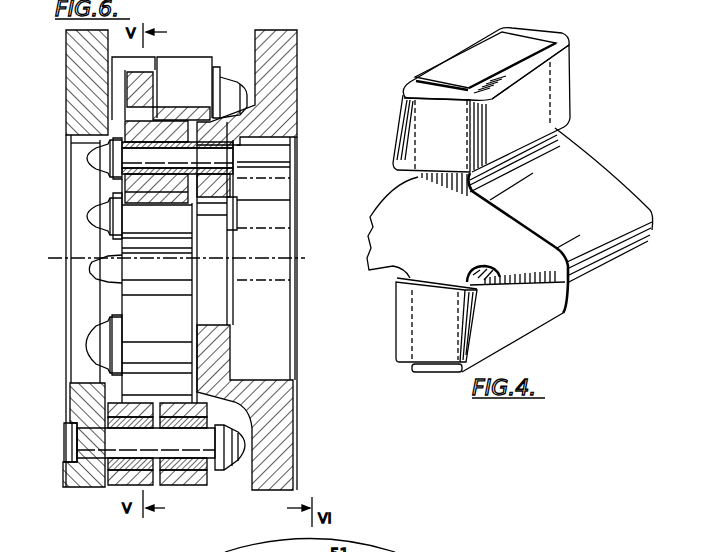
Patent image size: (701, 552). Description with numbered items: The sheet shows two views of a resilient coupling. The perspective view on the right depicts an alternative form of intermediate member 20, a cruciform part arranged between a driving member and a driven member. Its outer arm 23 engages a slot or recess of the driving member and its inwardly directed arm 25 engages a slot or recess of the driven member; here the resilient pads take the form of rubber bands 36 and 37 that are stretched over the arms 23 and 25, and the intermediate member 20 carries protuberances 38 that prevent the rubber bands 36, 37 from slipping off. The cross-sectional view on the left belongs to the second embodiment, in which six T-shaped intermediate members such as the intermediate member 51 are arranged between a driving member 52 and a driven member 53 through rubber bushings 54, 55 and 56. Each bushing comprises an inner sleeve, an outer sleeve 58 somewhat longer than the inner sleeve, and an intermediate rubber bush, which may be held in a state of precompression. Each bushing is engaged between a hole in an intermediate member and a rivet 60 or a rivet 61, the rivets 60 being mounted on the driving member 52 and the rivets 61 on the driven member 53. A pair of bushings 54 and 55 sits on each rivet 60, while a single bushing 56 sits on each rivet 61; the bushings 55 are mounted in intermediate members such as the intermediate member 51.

In FIG. 4, the intermediate member 20 is at (582, 176).
In FIG. 4, the outer arm 23 is at (510, 42).
In FIG. 4, the inwardly directed arm 25 is at (447, 375).
In FIG. 4, the rubber band 36 is at (568, 77).
In FIG. 4, the rubber band 37 is at (398, 349).
In FIG. 4, the protuberance 38 is at (413, 80).
In FIG. 6, the intermediate member 51 is at (167, 388).
In FIG. 6, the driving member 52 is at (67, 413).
In FIG. 6, the driven member 53 is at (293, 433).
In FIG. 6, the rubber bushing 54 is at (124, 472).
In FIG. 6, the rubber bushing 55 is at (197, 472).
In FIG. 6, the rubber bushing 56 is at (113, 125).
In FIG. 6, the outer sleeve 58 is at (410, 551).
In FIG. 6, the rivet 60 is at (96, 455).
In FIG. 6, the rivet 61 is at (227, 160).